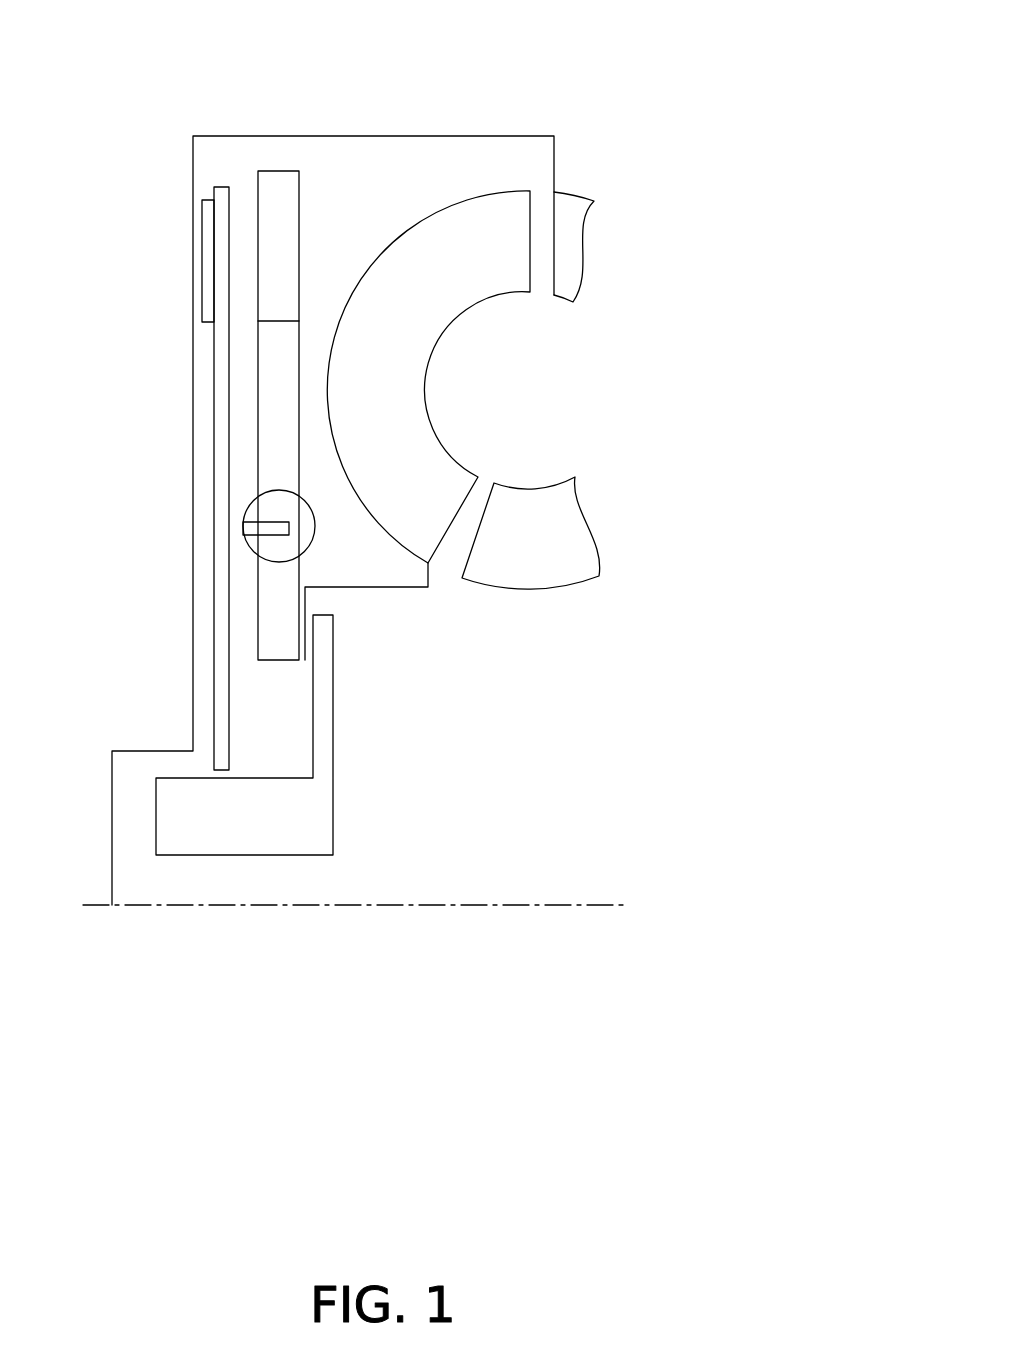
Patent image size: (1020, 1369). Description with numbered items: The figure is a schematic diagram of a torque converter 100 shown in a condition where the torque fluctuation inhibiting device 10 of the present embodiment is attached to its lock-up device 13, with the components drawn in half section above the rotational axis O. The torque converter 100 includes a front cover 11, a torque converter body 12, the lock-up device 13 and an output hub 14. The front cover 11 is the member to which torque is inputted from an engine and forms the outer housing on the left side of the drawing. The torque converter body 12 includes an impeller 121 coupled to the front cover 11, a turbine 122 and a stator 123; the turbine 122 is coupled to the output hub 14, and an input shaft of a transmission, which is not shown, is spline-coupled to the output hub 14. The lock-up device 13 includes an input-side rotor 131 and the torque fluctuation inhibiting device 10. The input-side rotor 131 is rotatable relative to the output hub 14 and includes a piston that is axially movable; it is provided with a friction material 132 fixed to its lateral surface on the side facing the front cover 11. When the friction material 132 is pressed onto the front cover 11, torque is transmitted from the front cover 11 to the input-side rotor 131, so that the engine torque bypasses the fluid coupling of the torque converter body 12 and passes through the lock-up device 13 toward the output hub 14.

The torque converter 100 is at (600, 108).
The torque fluctuation inhibiting device 10 is at (281, 171).
The front cover 11 is at (194, 422).
The torque converter body 12 is at (622, 193).
The impeller 121 is at (575, 265).
The turbine 122 is at (422, 367).
The stator 123 is at (565, 502).
The lock-up device 13 is at (237, 155).
The input-side rotor 131 is at (222, 187).
The friction material 132 is at (207, 267).
The output hub 14 is at (333, 703).